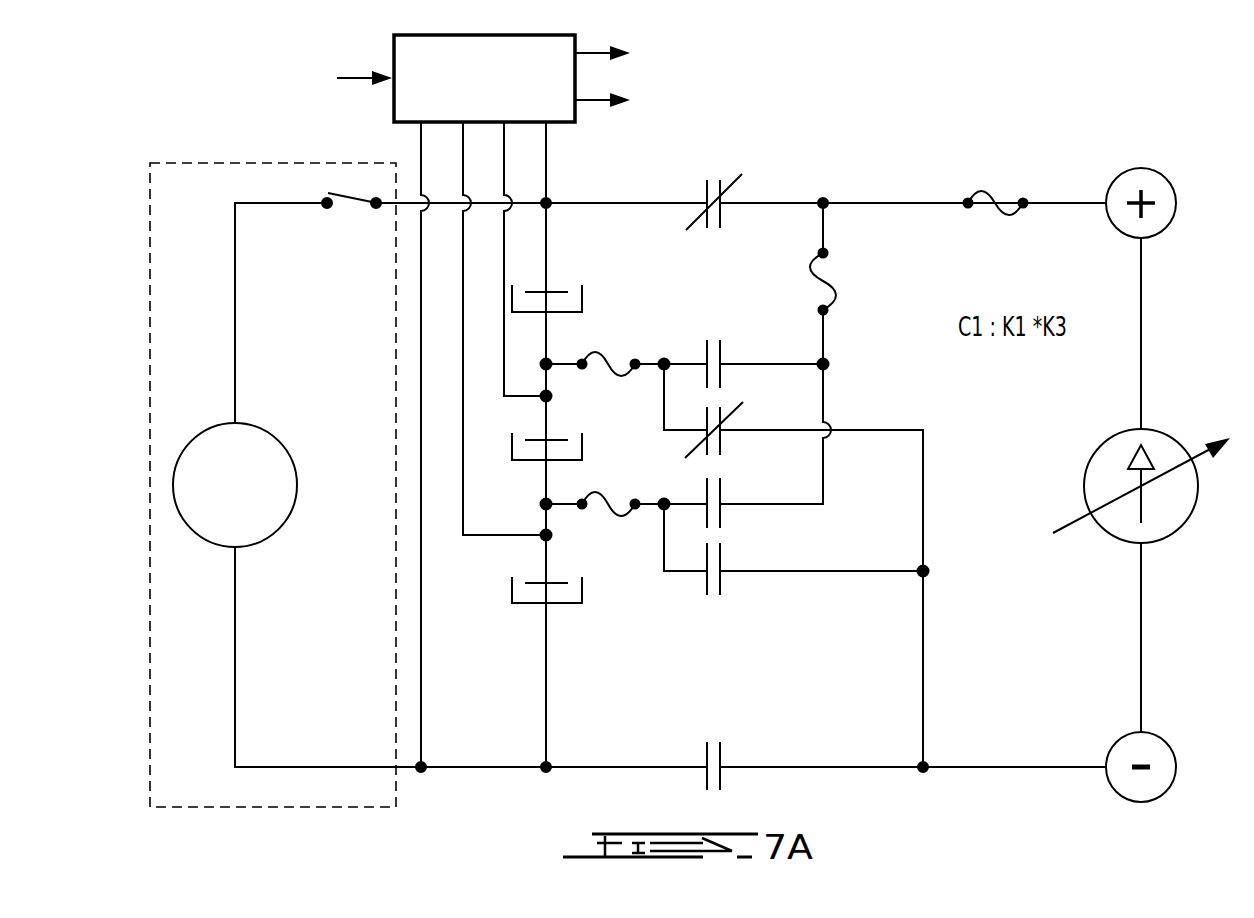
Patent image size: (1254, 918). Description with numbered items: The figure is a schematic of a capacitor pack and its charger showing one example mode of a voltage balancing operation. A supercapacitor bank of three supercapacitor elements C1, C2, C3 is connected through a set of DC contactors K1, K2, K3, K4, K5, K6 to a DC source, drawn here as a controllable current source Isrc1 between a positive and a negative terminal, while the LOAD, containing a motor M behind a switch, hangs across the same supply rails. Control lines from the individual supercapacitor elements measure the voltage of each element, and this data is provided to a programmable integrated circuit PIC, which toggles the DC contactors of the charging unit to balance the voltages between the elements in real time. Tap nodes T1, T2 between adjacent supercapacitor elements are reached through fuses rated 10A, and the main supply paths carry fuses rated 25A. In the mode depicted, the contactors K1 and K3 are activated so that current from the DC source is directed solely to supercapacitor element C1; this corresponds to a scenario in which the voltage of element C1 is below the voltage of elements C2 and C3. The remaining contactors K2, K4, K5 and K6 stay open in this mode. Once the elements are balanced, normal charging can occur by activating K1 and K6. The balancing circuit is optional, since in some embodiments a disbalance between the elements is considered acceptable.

The programmable integrated circuit PIC is at (505, 401).
The load LOAD is at (297, 480).
The motor M is at (235, 485).
The DC contactor K1 is at (725, 189).
The DC contactor K2 is at (744, 348).
The DC contactor K3 is at (796, 565).
The relay contact K4 (10A) K4 is at (706, 503).
The relay contact K5 (10A) K5 is at (793, 565).
The DC contactor K6 is at (722, 749).
The supercapacitor element C1 is at (547, 285).
The supercapacitor element C2 is at (547, 426).
The supercapacitor element C3 is at (547, 567).
The tap node T1 is at (533, 363).
The tap node T2 is at (532, 504).
The 10A fuses 10A is at (712, 359).
The 25A fuse 25A is at (996, 187).
The controllable current source Isrc1 is at (1141, 485).